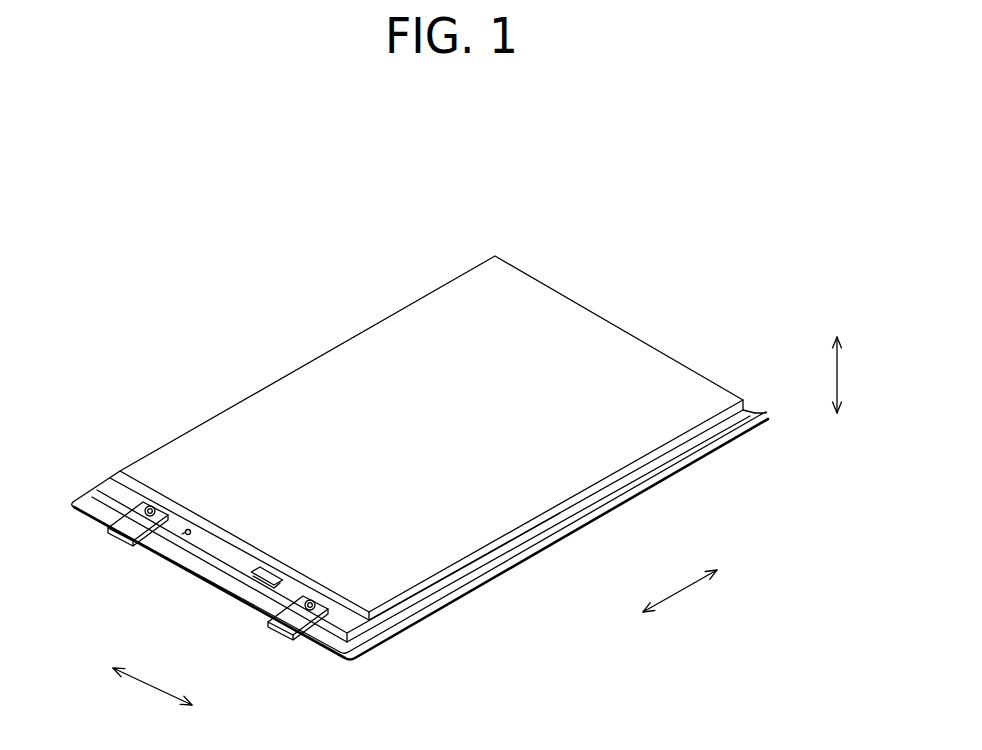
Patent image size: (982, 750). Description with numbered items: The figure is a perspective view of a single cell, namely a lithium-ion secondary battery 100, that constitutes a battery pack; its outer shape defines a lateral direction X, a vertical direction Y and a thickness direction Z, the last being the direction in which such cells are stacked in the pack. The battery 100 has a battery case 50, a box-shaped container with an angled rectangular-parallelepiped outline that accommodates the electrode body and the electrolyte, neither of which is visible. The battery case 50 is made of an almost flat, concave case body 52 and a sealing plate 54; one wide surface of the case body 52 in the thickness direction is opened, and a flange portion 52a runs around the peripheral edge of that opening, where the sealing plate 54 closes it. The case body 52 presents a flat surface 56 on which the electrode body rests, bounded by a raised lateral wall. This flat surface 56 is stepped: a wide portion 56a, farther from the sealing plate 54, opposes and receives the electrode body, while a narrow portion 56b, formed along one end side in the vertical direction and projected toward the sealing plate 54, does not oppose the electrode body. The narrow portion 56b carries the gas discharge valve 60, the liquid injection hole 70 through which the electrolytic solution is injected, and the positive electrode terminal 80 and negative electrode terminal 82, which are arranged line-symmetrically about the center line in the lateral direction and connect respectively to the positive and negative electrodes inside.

The single cell (lithium-ion secondary battery) 100 is at (612, 221).
The battery case 50 is at (380, 291).
The case body 52 is at (462, 272).
The flange portion 52a is at (668, 473).
The sealing plate 54 is at (473, 593).
The flat surface 56 is at (293, 387).
The wide portion 56a is at (233, 442).
The narrow portion 56b is at (213, 551).
The gas discharge valve 60 is at (253, 578).
The liquid injection hole 70 is at (183, 538).
The positive electrode terminal 80 is at (283, 625).
The negative electrode terminal 82 is at (125, 527).